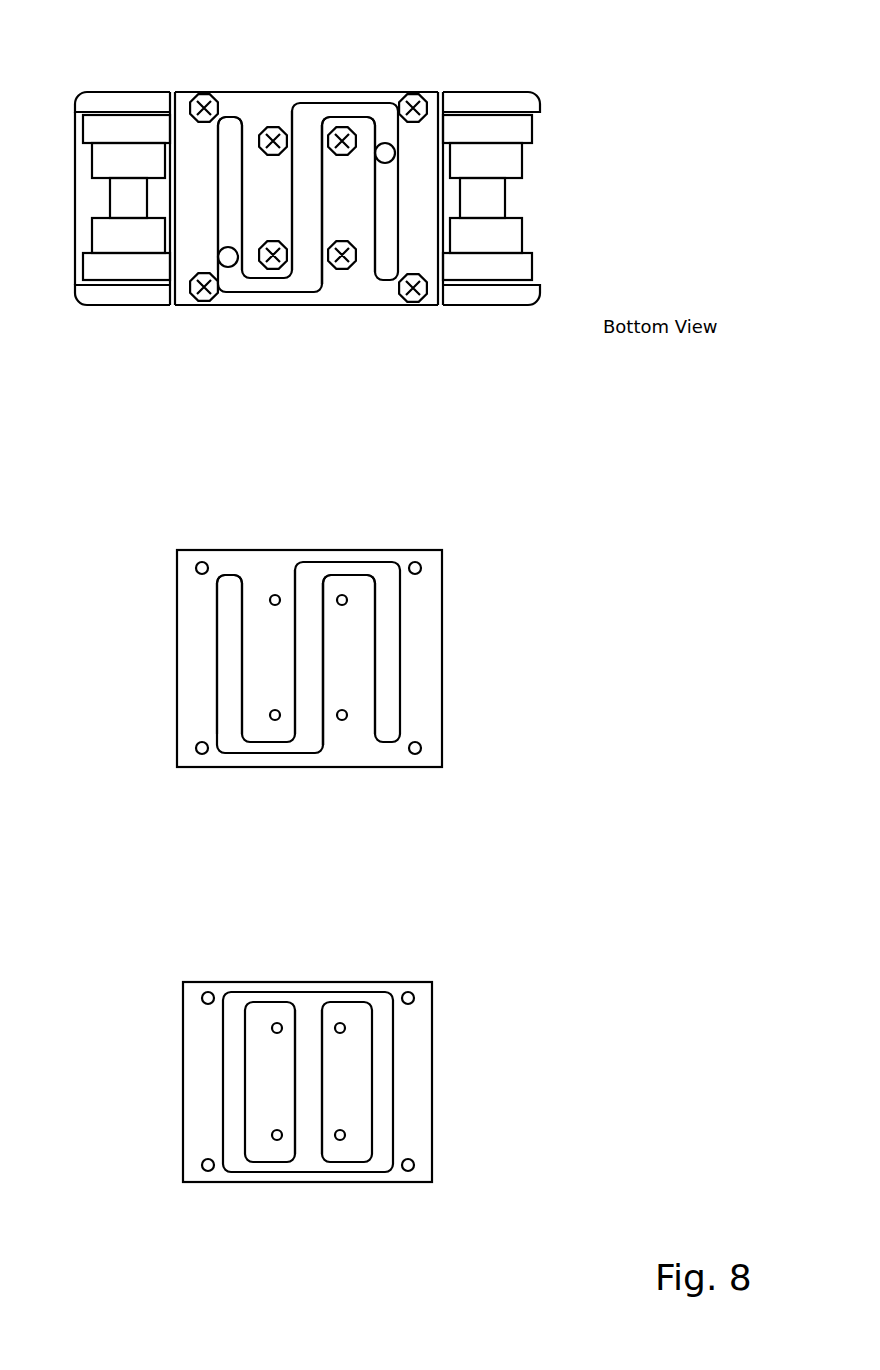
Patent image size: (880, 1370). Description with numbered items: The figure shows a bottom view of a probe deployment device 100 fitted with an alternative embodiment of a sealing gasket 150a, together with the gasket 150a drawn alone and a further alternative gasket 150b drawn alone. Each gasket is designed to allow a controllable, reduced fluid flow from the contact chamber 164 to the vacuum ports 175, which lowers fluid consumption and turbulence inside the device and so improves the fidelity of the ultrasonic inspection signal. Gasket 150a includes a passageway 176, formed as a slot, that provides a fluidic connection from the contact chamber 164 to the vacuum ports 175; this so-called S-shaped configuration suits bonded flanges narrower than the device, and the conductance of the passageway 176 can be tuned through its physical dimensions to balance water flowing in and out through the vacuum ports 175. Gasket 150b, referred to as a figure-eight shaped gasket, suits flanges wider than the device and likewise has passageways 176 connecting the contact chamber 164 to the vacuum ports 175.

The probe deployment device 100 is at (541, 71).
The sealing gasket 150a is at (245, 96).
The gasket 150b is at (187, 965).
The contact chamber 164 is at (308, 143).
The vacuum ports 175 is at (383, 155).
The passageway 176 is at (259, 288).